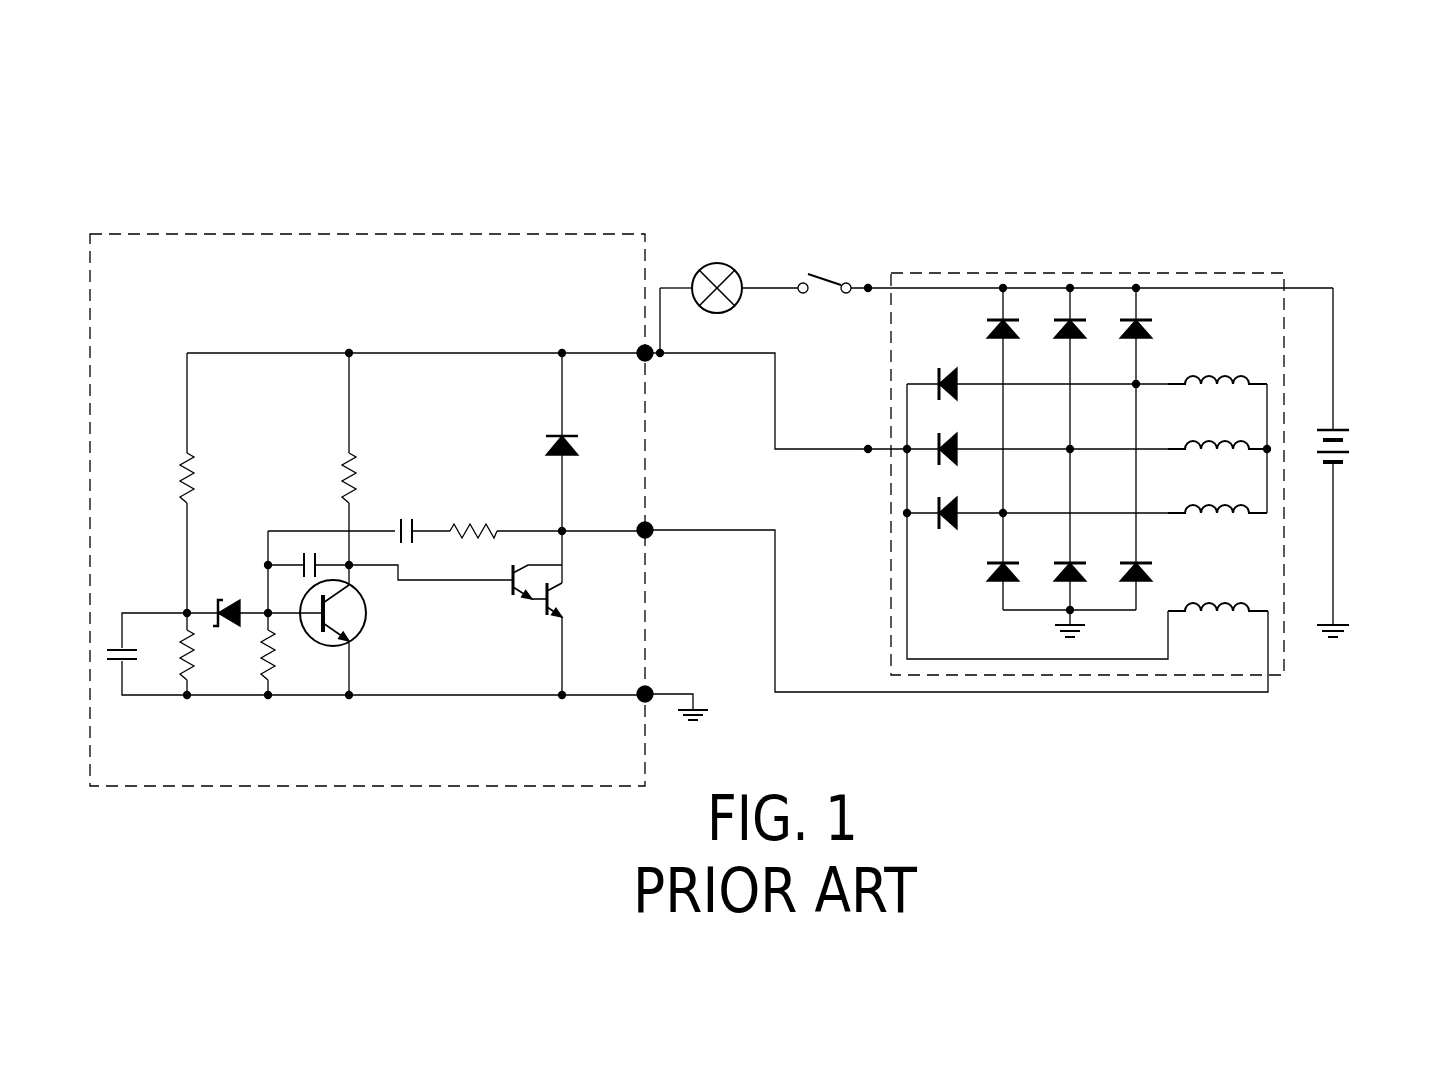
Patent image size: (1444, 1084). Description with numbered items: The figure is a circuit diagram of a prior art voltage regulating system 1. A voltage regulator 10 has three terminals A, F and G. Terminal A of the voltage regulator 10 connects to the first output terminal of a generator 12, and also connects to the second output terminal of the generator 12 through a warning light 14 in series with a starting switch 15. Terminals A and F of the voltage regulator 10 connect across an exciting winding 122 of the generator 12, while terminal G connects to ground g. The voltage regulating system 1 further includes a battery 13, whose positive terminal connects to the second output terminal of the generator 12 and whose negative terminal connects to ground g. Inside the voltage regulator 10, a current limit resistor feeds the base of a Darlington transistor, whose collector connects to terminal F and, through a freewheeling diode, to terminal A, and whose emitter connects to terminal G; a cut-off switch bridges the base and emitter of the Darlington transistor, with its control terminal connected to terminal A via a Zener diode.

The voltage regulating system 1 is at (1216, 113).
The voltage regulator 10 is at (368, 233).
The generator 12 is at (1133, 271).
The exciting winding 122 is at (1240, 612).
The battery 13 is at (1345, 421).
The warning light 14 is at (720, 262).
The starting switch 15 is at (826, 268).